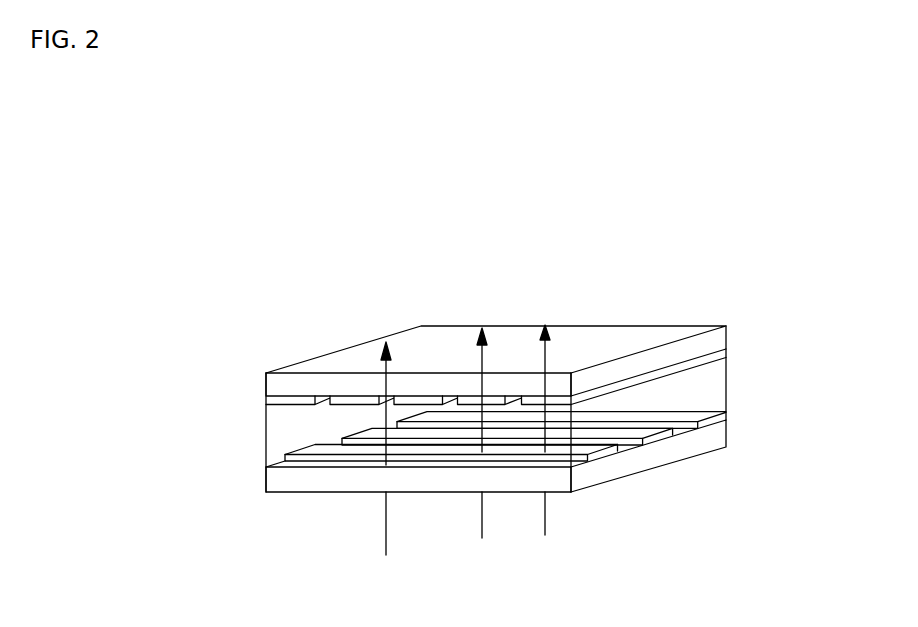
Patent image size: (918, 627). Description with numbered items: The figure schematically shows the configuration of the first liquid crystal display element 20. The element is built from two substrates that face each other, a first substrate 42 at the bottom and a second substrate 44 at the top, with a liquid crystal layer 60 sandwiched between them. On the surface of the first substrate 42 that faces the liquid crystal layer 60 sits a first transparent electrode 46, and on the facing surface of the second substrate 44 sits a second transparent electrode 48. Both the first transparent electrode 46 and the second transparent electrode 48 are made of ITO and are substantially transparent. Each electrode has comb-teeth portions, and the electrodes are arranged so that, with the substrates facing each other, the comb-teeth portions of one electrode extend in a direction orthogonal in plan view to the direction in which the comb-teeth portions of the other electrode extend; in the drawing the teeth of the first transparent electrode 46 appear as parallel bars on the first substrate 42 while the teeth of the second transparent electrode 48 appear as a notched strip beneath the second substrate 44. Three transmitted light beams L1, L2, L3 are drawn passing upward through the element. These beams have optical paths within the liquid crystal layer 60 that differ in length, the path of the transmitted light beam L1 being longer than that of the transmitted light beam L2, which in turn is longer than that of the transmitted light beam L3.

The first liquid crystal display element 20 is at (332, 232).
The first substrate 42 is at (256, 480).
The second substrate 44 is at (256, 383).
The first transparent electrode 46 is at (706, 414).
The second transparent electrode 48 is at (726, 355).
The liquid crystal layer 60 is at (725, 384).
The transmitted light beam L1 is at (384, 463).
The transmitted light beam L2 is at (481, 449).
The transmitted light beam L3 is at (544, 445).